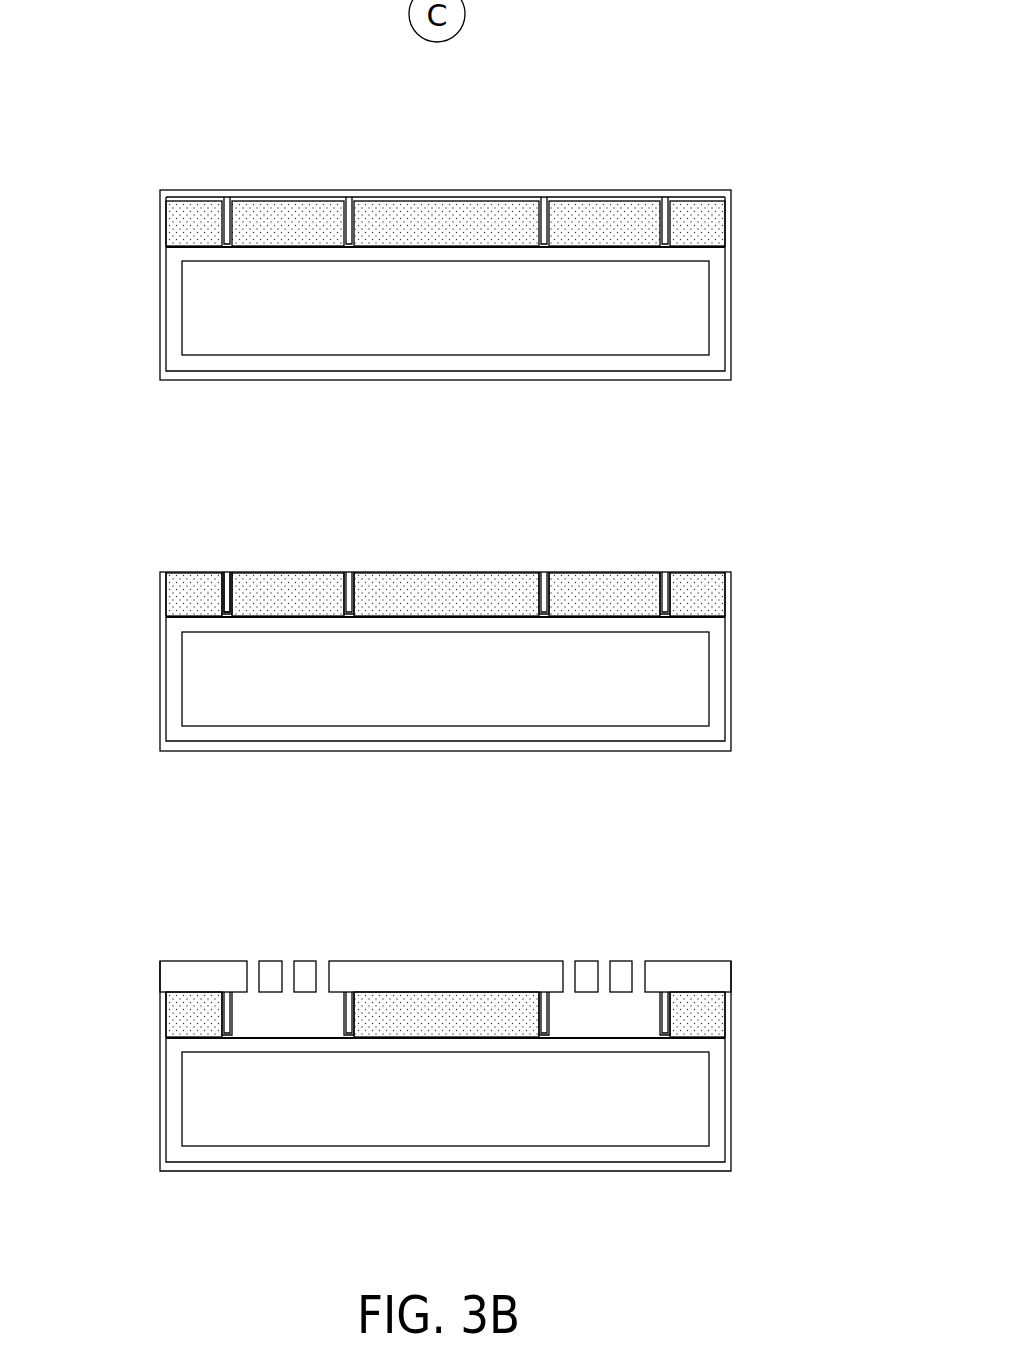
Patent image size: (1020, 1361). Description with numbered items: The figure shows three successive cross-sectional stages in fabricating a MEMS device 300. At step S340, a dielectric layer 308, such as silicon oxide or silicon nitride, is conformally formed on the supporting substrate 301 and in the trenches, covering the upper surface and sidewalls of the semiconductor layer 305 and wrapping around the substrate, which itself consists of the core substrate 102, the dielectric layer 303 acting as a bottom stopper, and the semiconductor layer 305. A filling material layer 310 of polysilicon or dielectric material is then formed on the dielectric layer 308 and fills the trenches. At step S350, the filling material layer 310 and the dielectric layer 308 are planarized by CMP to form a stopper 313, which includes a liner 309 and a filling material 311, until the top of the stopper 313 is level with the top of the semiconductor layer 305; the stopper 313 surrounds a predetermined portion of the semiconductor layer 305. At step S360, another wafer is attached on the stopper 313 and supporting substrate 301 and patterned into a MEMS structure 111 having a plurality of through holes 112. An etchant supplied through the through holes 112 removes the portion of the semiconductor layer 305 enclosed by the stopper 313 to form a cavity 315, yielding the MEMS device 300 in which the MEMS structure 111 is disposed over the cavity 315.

The core substrate 102 is at (673, 331).
The MEMS structure 111 is at (744, 975).
The through holes 112 is at (327, 935).
The MEMS device 300 is at (678, 945).
The supporting substrate 301 is at (747, 335).
The dielectric layer 303 is at (703, 255).
The semiconductor layer 305 is at (175, 221).
The dielectric layer 308 is at (222, 226).
The liner 309 is at (190, 590).
The filling material layer 310 is at (285, 192).
The filling material 311 is at (225, 572).
The stopper 313 is at (283, 495).
The cavity 315 is at (287, 1011).
The step S340 is at (437, 125).
The step S350 is at (435, 507).
The step S360 is at (436, 878).